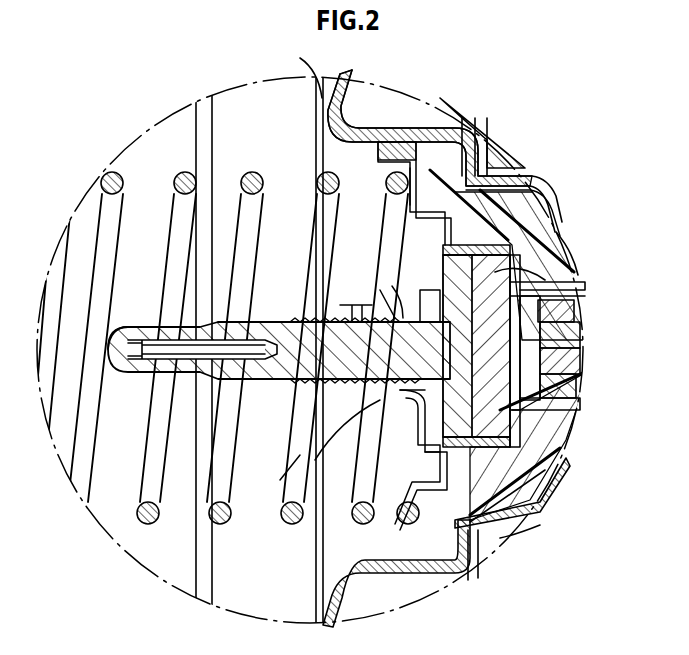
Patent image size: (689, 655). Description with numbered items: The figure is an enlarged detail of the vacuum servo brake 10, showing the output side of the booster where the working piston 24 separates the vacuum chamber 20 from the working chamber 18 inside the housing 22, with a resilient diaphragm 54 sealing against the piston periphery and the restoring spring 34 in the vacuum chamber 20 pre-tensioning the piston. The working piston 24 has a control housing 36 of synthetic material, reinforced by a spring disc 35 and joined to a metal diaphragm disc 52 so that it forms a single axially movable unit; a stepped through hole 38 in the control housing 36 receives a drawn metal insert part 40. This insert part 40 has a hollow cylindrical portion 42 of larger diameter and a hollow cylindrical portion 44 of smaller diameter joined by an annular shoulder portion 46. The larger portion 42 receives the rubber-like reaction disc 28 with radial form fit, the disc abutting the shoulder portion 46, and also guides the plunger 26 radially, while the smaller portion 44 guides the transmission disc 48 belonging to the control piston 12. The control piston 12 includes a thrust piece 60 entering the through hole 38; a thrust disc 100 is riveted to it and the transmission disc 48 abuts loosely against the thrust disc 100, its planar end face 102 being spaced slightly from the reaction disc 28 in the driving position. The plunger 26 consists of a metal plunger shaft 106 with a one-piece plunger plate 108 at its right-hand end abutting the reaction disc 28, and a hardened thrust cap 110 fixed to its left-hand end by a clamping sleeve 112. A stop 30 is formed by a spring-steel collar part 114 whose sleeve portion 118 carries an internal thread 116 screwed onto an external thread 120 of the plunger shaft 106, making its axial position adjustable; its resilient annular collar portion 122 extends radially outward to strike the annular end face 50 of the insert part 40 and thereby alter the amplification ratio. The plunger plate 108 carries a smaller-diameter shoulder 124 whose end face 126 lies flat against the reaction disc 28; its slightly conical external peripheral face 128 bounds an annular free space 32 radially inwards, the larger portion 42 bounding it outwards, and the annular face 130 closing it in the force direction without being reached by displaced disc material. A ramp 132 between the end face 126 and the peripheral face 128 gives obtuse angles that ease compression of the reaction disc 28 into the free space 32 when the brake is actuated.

The vacuum servo brake 10 is at (160, 142).
The control piston 12 is at (590, 352).
The working chamber 18 is at (387, 112).
The vacuum chamber 20 is at (278, 112).
The housing 22 is at (483, 132).
The working piston 24 is at (408, 588).
The plunger 26 is at (268, 388).
The reaction disc 28 is at (520, 262).
The stop 30 is at (440, 446).
The free space 32 is at (528, 204).
The restoring spring 34 is at (101, 181).
The spring disc 35 is at (410, 195).
The control housing 36 is at (432, 122).
The stepped through hole 38 is at (572, 398).
The insert part 40 is at (500, 180).
The hollow cylindrical portion of larger diameter 42 is at (462, 246).
The hollow cylindrical portion of smaller diameter 44 is at (568, 290).
The annular shoulder portion 46 is at (548, 278).
The transmission disc 48 is at (550, 436).
The annular end face 50 is at (455, 460).
The diaphragm disc 52 is at (302, 66).
The diaphragm 54 is at (354, 76).
The thrust piece 60 is at (572, 352).
The thrust disc 100 is at (572, 372).
The end face 102 is at (545, 468).
The plunger shaft 106 is at (310, 330).
The plunger plate 108 is at (440, 408).
The thrust cap 110 is at (125, 330).
The clamping sleeve 112 is at (152, 378).
The collar part 114 is at (356, 300).
The internal thread 116 is at (382, 288).
The sleeve portion 118 is at (300, 460).
The external thread 120 is at (316, 460).
The collar portion 122 is at (432, 290).
The shoulder 124 is at (515, 532).
The end face 126 is at (560, 316).
The external peripheral face 128 is at (546, 252).
The annular face 130 is at (472, 560).
The ramp 132 is at (525, 506).